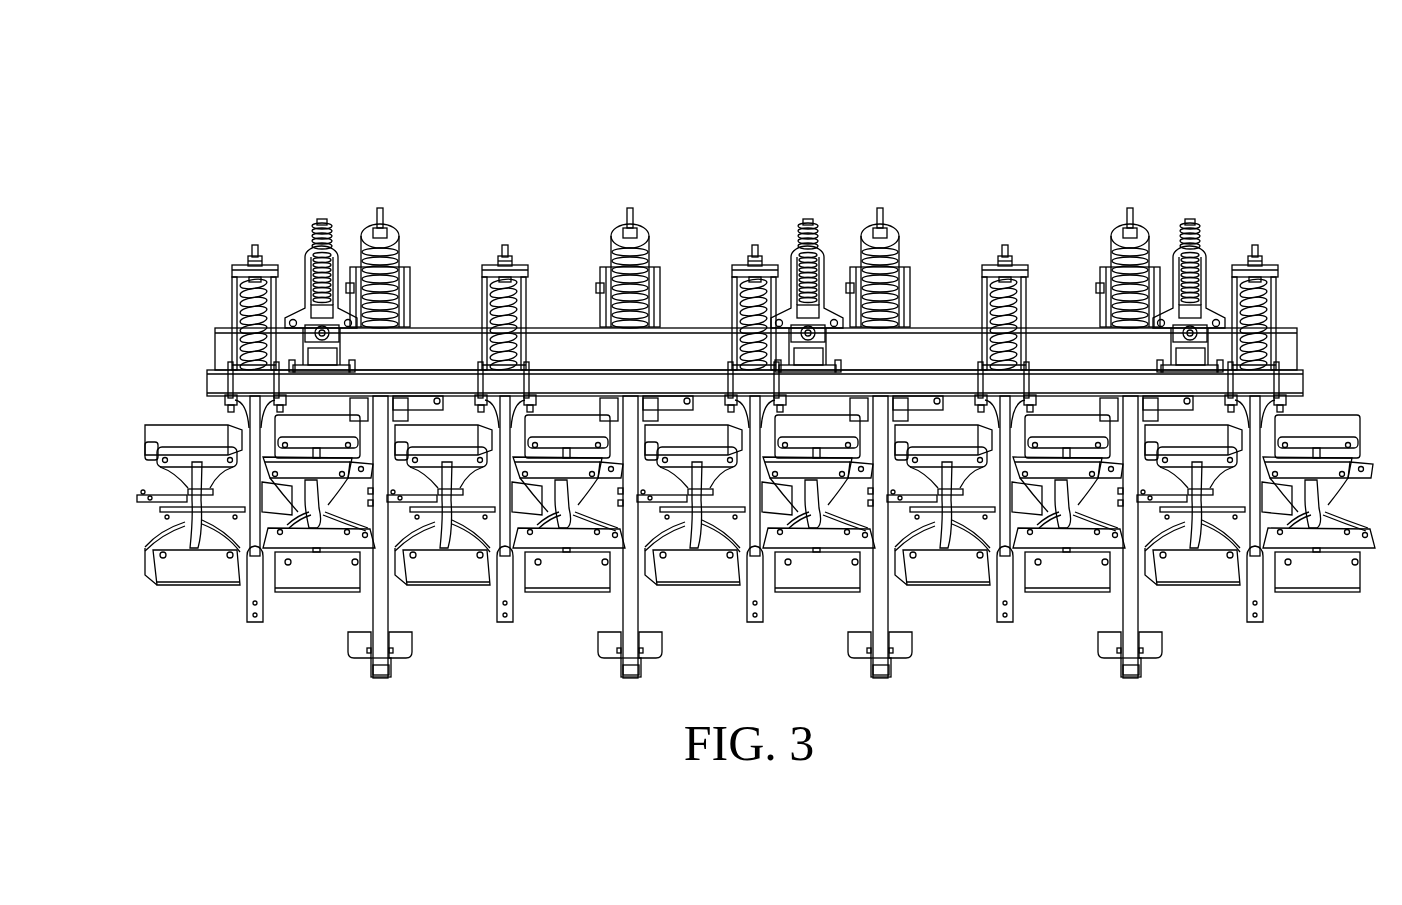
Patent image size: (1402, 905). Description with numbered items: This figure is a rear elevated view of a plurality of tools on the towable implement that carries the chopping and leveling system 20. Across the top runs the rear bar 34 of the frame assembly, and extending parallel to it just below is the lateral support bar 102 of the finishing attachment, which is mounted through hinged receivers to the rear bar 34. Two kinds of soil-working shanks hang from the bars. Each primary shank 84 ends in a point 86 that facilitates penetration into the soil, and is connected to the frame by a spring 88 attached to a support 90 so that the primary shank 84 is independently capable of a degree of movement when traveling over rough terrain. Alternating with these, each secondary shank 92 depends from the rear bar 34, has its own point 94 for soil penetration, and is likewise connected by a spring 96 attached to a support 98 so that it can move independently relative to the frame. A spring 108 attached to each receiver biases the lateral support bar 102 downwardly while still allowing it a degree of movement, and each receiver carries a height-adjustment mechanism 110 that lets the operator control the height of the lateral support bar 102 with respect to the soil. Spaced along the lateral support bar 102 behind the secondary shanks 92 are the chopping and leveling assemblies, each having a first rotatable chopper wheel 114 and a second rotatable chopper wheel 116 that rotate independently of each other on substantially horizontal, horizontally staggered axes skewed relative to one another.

The chopping and leveling system 20 is at (1248, 160).
The rear bar 34 is at (1290, 354).
The primary shank 84 is at (383, 619).
The point 86 is at (378, 680).
The spring 88 is at (398, 250).
The support 90 is at (357, 270).
The secondary shank 92 is at (258, 548).
The point 94 is at (255, 623).
The spring 96 is at (243, 293).
The support 98 is at (237, 266).
The lateral support bar 102 is at (212, 384).
The spring 108 is at (315, 270).
The height-adjustment mechanism 110 is at (332, 354).
The first rotatable chopper wheel 114 is at (207, 574).
The second rotatable chopper wheel 116 is at (312, 580).